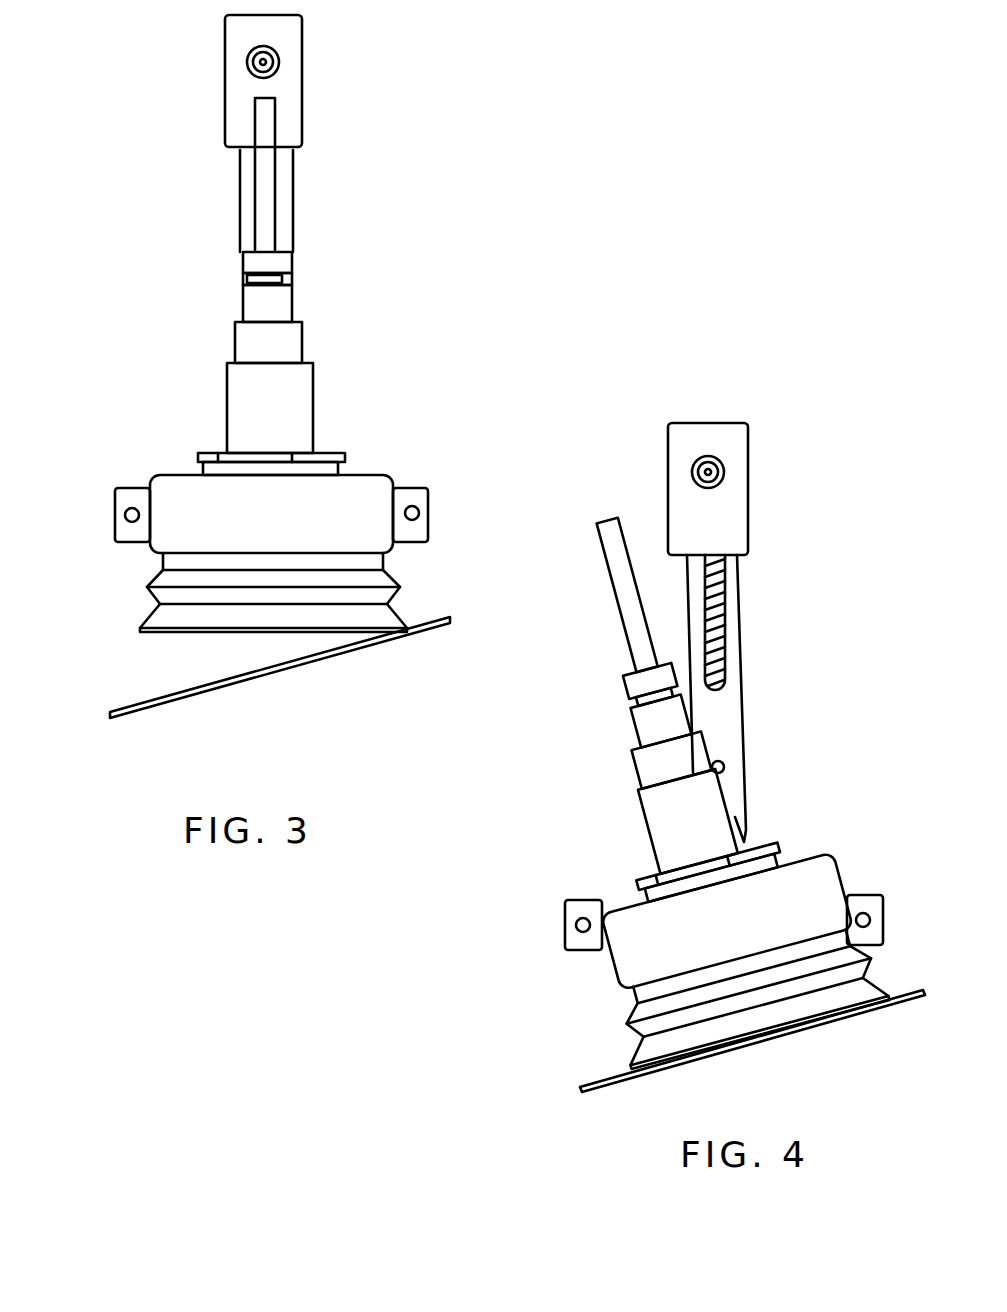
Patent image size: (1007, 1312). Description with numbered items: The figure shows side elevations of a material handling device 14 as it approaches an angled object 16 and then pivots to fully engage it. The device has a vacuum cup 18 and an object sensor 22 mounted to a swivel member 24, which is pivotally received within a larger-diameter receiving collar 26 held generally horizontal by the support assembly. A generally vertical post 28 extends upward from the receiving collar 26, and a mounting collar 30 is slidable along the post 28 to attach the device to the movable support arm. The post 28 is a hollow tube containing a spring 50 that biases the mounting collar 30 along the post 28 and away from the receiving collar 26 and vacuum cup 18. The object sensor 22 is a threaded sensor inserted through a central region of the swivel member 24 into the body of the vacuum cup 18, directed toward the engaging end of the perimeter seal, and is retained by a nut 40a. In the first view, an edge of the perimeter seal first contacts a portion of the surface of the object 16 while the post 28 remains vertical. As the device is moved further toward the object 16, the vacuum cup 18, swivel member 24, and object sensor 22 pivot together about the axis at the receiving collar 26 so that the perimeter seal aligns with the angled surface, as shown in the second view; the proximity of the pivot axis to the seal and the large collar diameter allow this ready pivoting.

In FIG. 3, the material handling device 14 is at (417, 247).
In FIG. 3, the object 16 is at (202, 690).
In FIG. 4, the object 16 is at (732, 1047).
In FIG. 3, the vacuum cup 18 is at (160, 622).
In FIG. 4, the vacuum cup 18 is at (750, 996).
In FIG. 3, the object sensor 22 is at (298, 402).
In FIG. 4, the object sensor 22 is at (653, 692).
In FIG. 3, the swivel member 24 is at (368, 495).
In FIG. 4, the swivel member 24 is at (812, 873).
In FIG. 3, the receiving collar 26 is at (428, 503).
In FIG. 4, the receiving collar 26 is at (563, 940).
In FIG. 3, the post 28 is at (293, 192).
In FIG. 4, the post 28 is at (742, 630).
In FIG. 3, the mounting collar 30 is at (292, 58).
In FIG. 4, the mounting collar 30 is at (747, 492).
In FIG. 3, the nut 40a is at (215, 452).
In FIG. 4, the nut 40a is at (643, 884).
In FIG. 4, the spring 50 is at (718, 593).